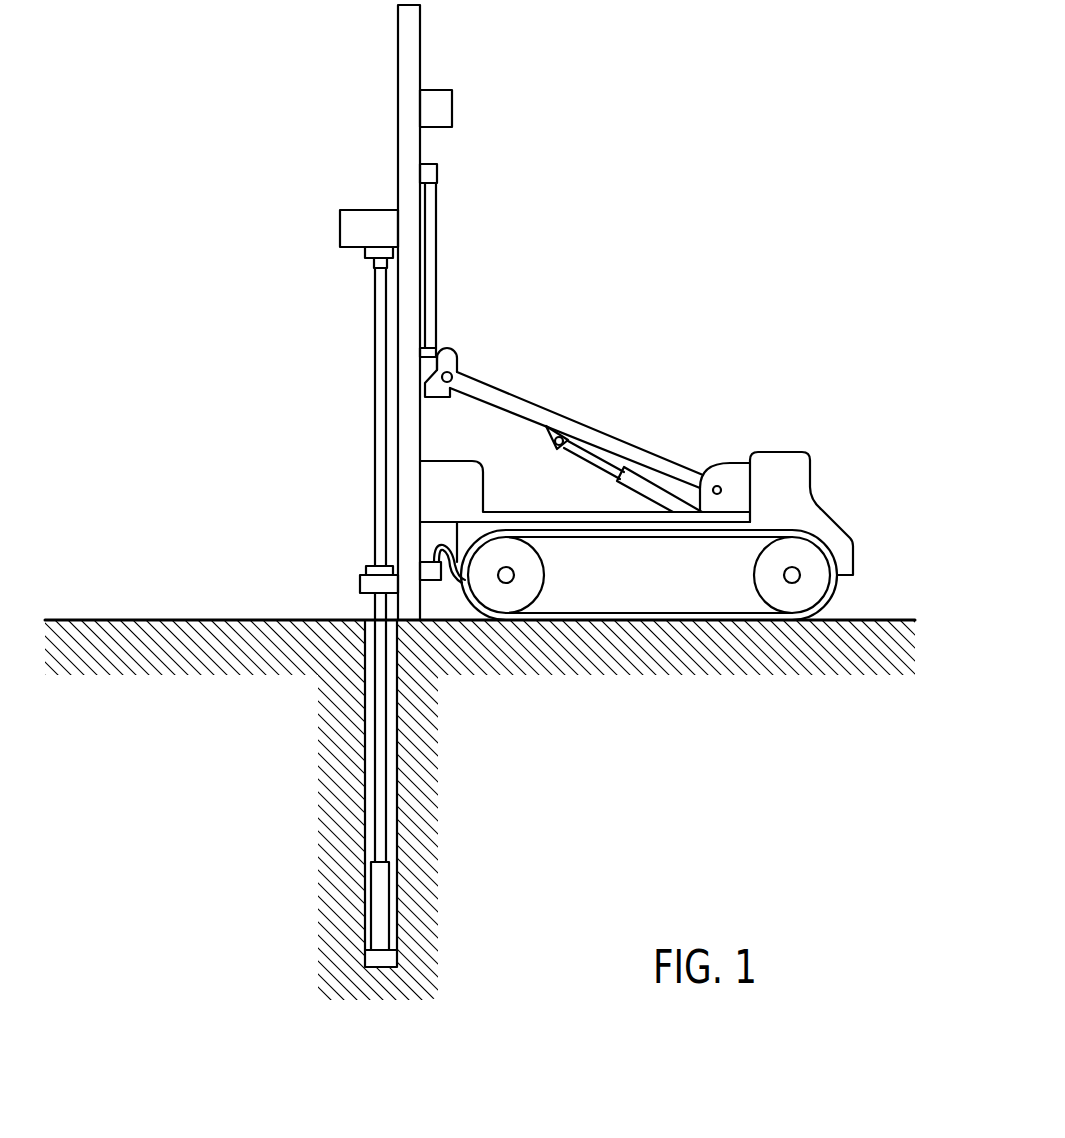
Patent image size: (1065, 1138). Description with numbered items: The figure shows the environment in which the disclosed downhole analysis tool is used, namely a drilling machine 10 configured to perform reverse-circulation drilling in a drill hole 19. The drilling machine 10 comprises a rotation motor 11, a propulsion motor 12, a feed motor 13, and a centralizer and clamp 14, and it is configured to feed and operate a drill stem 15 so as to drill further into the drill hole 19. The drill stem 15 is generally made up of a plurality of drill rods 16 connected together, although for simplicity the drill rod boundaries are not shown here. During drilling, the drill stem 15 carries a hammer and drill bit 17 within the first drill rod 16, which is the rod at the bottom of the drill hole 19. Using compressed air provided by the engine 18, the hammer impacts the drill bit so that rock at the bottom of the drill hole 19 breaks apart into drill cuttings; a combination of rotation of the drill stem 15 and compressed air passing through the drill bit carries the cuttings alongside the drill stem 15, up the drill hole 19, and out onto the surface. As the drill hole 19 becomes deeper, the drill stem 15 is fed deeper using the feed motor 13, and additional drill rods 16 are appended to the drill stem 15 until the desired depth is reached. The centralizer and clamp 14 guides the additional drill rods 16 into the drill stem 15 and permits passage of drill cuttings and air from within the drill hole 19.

The drilling machine 10 is at (668, 838).
The rotation motor 11 is at (358, 210).
The propulsion motor 12 is at (792, 583).
The feed motor 13 is at (440, 100).
The centralizer and clamp 14 is at (360, 578).
The drill stem 15 is at (375, 677).
The drill rod 16 is at (375, 360).
The hammer and drill bit 17 is at (378, 928).
The engine 18 is at (782, 451).
The drill hole 19 is at (397, 785).